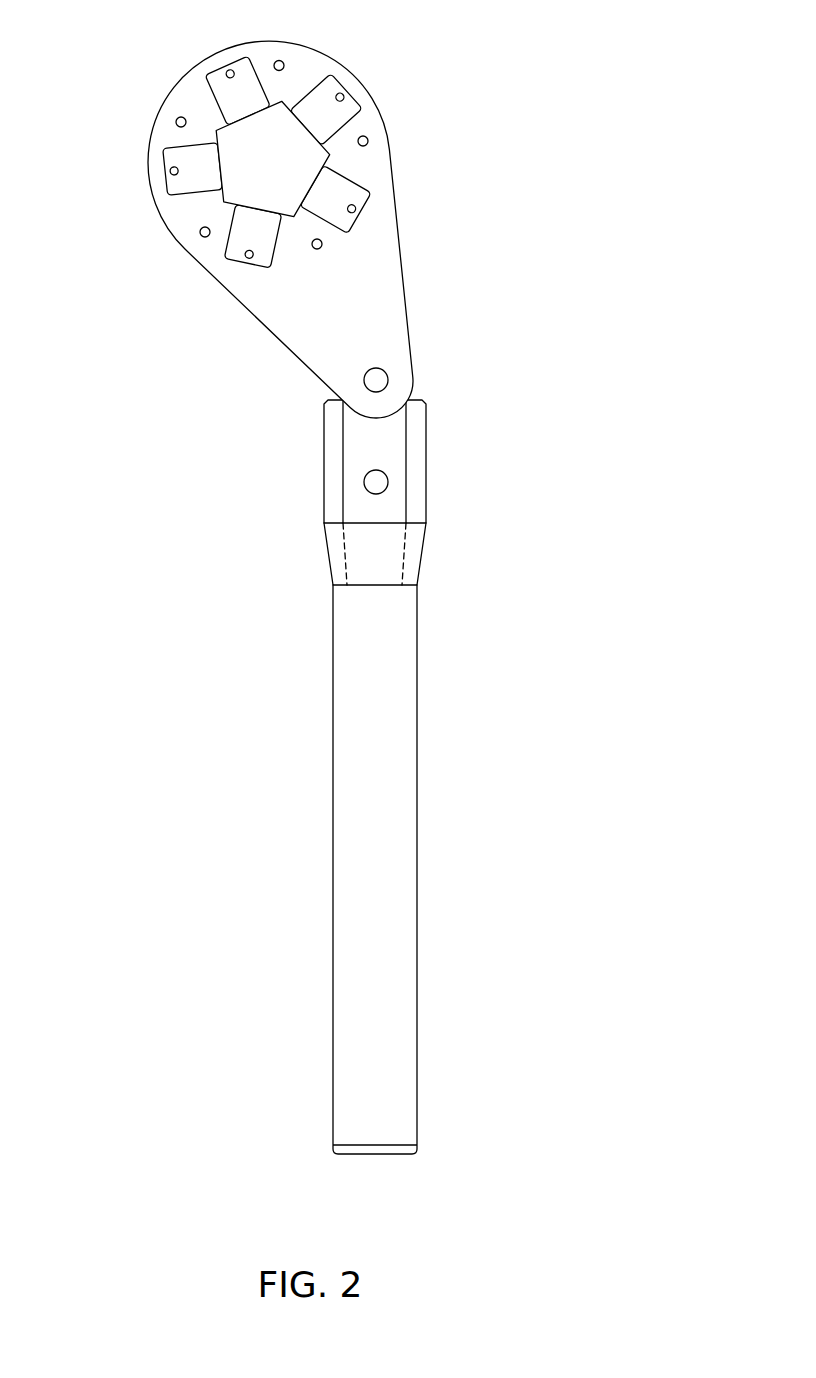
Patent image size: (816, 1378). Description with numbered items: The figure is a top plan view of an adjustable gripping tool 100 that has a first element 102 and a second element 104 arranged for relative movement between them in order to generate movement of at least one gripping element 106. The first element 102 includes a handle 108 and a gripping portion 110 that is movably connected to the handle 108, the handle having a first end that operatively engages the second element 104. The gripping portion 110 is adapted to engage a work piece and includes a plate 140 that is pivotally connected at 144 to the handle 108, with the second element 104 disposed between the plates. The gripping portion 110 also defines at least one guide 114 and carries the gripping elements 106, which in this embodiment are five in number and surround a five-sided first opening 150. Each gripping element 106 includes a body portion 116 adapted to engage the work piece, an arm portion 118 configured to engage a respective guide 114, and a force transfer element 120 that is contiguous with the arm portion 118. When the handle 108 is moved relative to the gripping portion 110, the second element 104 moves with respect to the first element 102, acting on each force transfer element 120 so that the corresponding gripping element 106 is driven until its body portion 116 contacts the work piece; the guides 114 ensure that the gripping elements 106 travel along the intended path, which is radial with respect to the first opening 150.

The adjustable gripping tool 100 is at (147, 528).
The first element 102 is at (292, 539).
The second element 104 is at (120, 212).
The gripping element 106 is at (236, 119).
The handle 108 is at (340, 864).
The gripping portion 110 is at (291, 371).
The guide 114 is at (237, 62).
The body portion 116 is at (325, 160).
The arm portion 118 is at (322, 97).
The force transfer element 120 is at (226, 72).
The plate 140 is at (393, 277).
The pivotal connection 144 is at (389, 380).
The first opening 150 is at (258, 176).